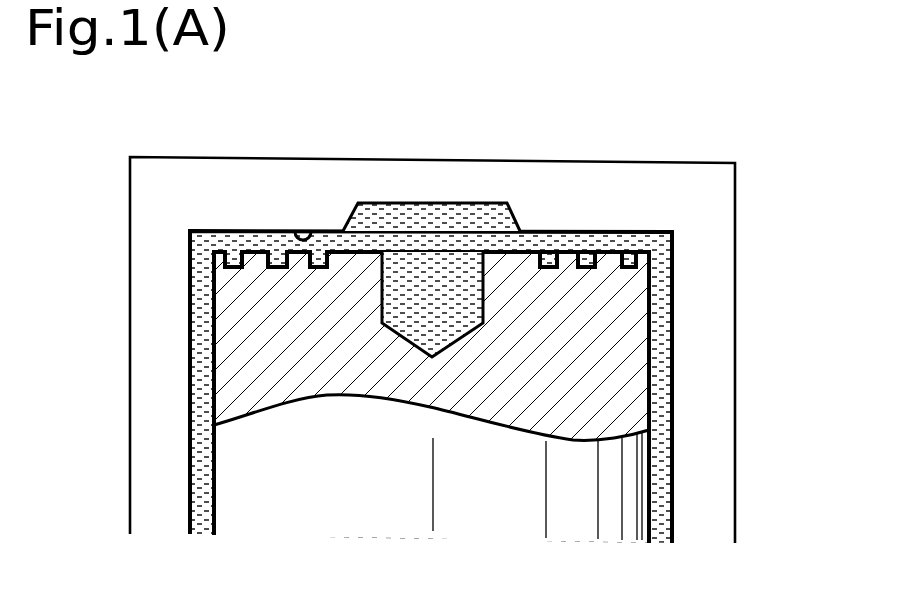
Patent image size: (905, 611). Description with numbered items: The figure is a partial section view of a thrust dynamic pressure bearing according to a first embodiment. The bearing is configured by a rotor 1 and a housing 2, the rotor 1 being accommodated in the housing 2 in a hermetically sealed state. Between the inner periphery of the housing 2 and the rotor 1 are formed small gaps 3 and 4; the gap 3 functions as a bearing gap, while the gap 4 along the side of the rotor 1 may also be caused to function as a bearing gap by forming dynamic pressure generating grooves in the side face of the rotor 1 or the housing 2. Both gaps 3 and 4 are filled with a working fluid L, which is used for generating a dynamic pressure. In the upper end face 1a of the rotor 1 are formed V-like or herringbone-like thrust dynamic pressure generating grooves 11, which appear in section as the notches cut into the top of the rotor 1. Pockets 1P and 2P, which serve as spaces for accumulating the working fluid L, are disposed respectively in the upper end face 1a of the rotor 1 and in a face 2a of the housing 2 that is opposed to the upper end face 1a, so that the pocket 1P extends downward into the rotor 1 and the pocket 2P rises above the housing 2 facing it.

The rotor 1 is at (640, 400).
The pocket 1P is at (448, 277).
The upper end face 1a is at (565, 247).
The thrust dynamic pressure generating grooves 11 is at (277, 256).
The housing 2 is at (736, 229).
The face 2a is at (293, 232).
The pocket 2P is at (390, 215).
The gap 3 is at (608, 242).
The gap 4 is at (665, 343).
The working fluid L is at (668, 293).